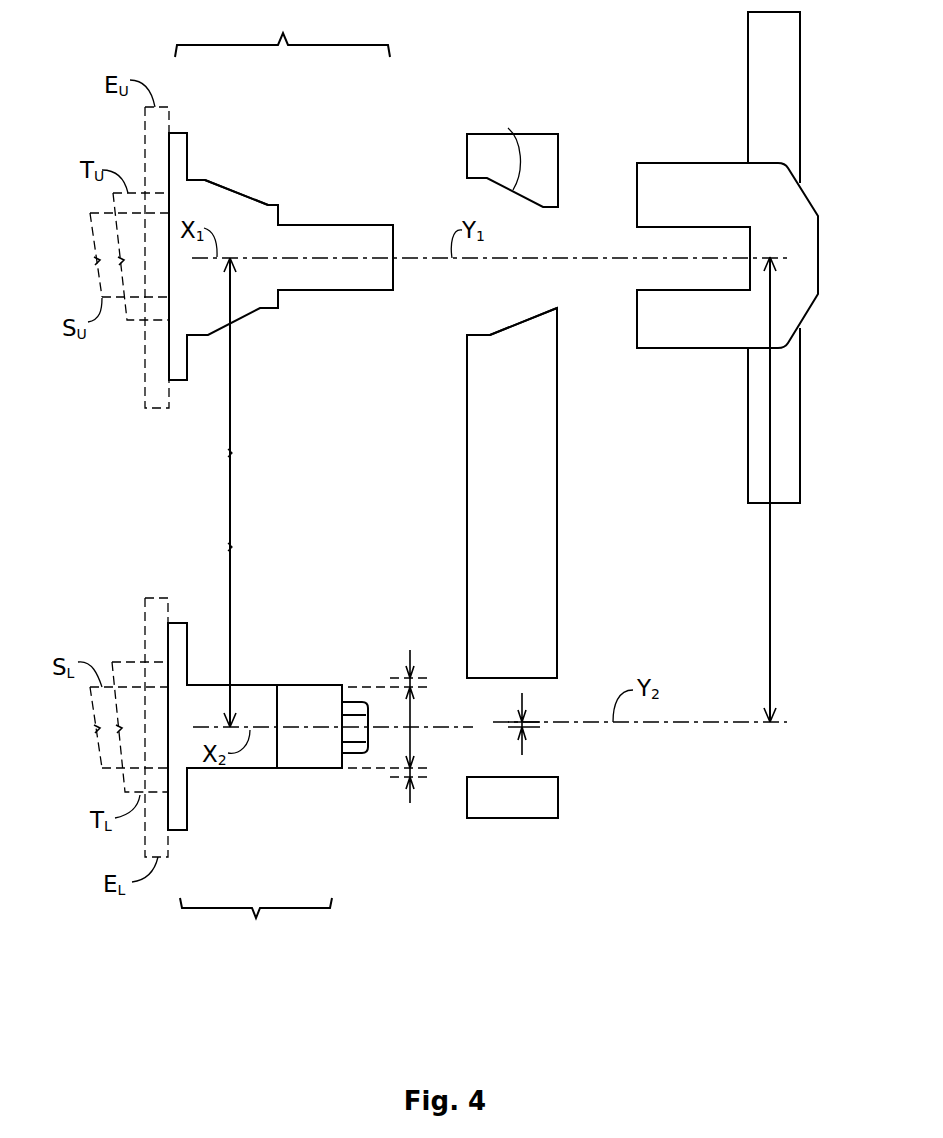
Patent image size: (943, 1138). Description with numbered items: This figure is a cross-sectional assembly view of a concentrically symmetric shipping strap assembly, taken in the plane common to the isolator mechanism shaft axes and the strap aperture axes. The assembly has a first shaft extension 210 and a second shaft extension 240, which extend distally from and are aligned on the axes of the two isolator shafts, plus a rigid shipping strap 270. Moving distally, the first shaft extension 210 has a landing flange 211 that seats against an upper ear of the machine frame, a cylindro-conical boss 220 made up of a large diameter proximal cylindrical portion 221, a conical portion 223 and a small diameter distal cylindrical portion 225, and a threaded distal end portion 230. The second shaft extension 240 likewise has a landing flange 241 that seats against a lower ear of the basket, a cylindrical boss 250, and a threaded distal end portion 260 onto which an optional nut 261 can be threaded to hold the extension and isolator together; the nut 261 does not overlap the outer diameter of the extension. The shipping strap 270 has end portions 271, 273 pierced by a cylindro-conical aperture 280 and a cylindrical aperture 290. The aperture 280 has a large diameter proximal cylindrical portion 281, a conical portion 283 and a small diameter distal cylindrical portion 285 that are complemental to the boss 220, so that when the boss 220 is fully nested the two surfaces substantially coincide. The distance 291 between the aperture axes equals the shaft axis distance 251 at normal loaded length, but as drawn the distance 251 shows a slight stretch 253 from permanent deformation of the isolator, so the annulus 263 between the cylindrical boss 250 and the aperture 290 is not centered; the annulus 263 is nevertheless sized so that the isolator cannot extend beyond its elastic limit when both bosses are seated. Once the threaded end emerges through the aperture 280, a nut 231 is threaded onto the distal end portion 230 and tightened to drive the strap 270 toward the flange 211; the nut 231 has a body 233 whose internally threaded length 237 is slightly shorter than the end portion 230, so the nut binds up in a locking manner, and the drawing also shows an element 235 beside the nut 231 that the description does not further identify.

The first shaft extension 210 is at (282, 33).
The landing flange 211 is at (182, 131).
The cylindro-conical boss 220 is at (242, 287).
The large diameter proximal cylindrical portion 221 is at (195, 178).
The conical portion 223 is at (232, 190).
The small diameter distal cylindrical portion 225 is at (270, 196).
The threaded distal end portion 230 is at (345, 290).
The nut 231 is at (723, 170).
The nut body 233 is at (708, 352).
The support bar 235 is at (748, 33).
The internally threaded portion length 237 is at (670, 228).
The second shaft extension 240 is at (256, 924).
The landing flange 241 is at (180, 830).
The cylindrical boss 250 is at (218, 690).
The shaft axis distance 251 is at (232, 500).
The stretch 253 is at (525, 705).
The threaded distal end portion 260 is at (295, 685).
The nut 261 is at (355, 755).
The annulus 263 is at (410, 650).
The shipping strap 270 is at (467, 444).
The end portion 271 is at (542, 142).
The end portion 273 is at (508, 802).
The cylindro-conical aperture 280 is at (492, 328).
The large diameter proximal cylindrical portion 281 is at (478, 178).
The conical portion 283 is at (513, 190).
The small diameter distal cylindrical portion 285 is at (550, 200).
The cylindrical aperture 290 is at (540, 680).
The aperture axis distance 291 is at (770, 565).